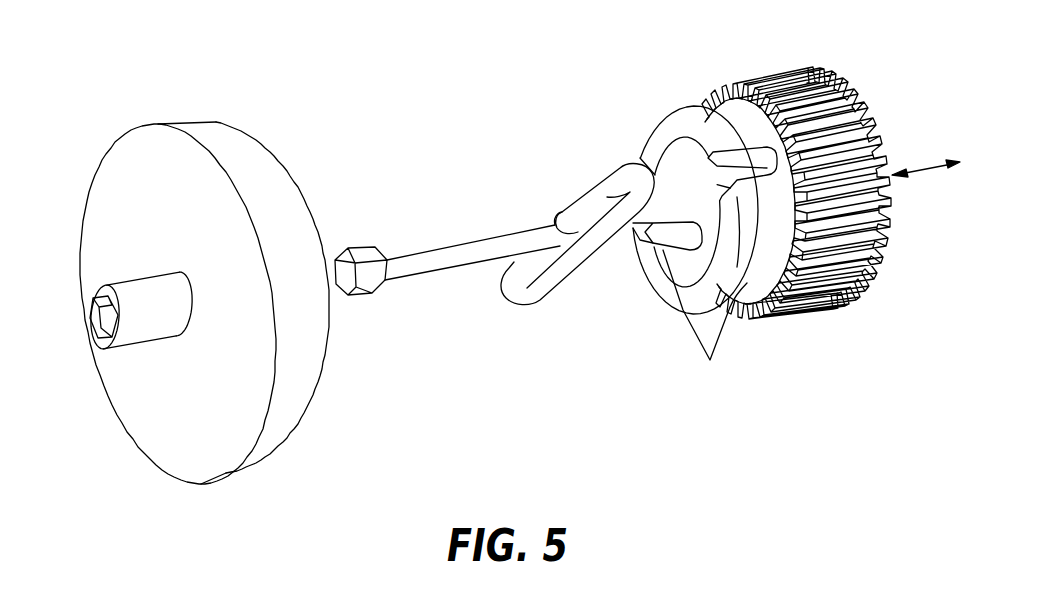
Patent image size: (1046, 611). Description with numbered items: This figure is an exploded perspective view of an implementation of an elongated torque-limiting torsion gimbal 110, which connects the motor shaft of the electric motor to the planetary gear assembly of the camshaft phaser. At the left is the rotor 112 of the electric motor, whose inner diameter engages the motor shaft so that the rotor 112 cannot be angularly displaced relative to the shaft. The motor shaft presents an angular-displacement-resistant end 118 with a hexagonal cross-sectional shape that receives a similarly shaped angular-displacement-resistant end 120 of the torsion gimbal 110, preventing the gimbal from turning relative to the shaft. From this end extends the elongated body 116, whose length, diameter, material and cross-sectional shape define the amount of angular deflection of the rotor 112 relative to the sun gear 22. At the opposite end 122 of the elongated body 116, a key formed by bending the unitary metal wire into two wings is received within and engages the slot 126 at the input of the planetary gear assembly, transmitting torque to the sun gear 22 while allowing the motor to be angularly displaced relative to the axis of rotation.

The sun gear 22 is at (763, 68).
The torque-limiting torsion gimbal 110 is at (460, 225).
The rotor 112 is at (179, 205).
The elongated body 116 is at (453, 267).
The angular-displacement-resistant end 118 is at (109, 316).
The angular-displacement-resistant end 120 is at (353, 234).
The opposite end 122 is at (558, 214).
The slot 126 is at (705, 248).